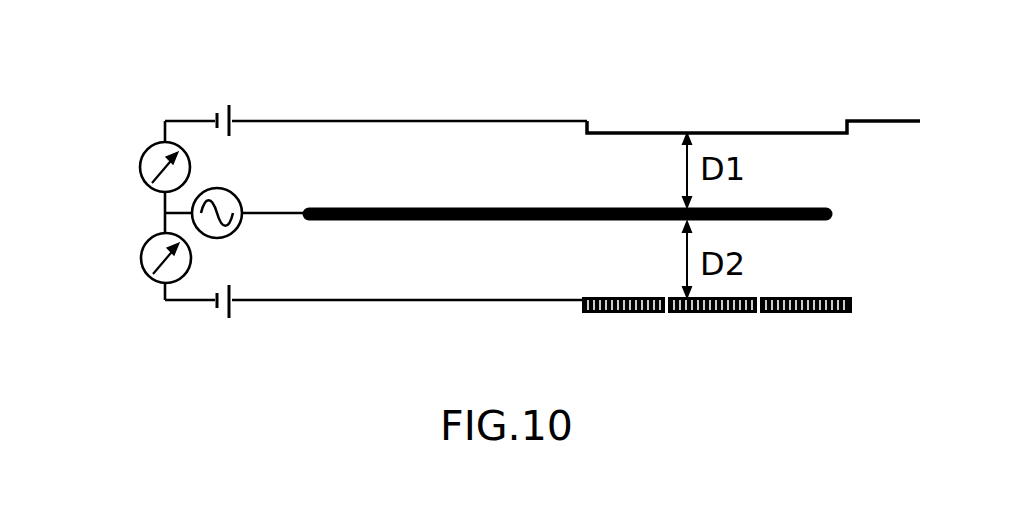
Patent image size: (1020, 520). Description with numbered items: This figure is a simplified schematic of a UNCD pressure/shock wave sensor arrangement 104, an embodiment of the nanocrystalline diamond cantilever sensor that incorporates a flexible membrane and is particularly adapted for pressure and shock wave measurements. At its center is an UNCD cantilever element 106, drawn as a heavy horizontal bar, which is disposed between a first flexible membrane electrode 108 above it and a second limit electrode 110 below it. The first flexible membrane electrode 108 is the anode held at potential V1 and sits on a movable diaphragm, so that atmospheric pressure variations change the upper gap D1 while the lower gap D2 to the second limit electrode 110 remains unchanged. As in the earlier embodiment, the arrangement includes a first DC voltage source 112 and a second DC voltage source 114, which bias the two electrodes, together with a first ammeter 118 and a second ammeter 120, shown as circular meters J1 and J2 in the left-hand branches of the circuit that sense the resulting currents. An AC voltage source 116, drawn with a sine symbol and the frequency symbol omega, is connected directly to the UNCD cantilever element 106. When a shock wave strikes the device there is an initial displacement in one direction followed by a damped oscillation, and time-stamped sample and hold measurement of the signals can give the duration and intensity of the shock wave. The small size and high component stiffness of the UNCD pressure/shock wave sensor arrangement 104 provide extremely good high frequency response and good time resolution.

The UNCD pressure/shock wave sensor arrangement 104 is at (178, 374).
The UNCD cantilever element 106 is at (826, 213).
The first flexible membrane electrode 108 is at (650, 130).
The second limit electrode 110 is at (650, 313).
The first DC voltage source 112 is at (238, 110).
The second DC voltage source 114 is at (212, 310).
The AC voltage source 116 is at (236, 197).
The first ammeter 118 is at (145, 150).
The second ammeter 120 is at (155, 283).